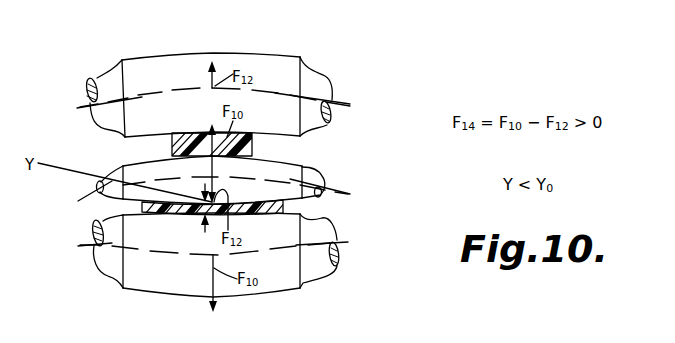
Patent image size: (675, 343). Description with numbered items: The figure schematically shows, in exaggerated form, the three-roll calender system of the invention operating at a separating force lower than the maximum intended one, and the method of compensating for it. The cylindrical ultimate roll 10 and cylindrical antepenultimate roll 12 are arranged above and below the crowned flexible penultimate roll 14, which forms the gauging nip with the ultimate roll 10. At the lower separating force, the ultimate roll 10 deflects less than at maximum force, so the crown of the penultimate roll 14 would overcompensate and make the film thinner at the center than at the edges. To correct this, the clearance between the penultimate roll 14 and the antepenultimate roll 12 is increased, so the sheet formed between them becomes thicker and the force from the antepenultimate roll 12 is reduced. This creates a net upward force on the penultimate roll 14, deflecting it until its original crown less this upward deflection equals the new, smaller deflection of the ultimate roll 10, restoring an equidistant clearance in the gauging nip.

The ultimate roll 10 is at (288, 283).
The antepenultimate roll 12 is at (288, 65).
The penultimate roll 14 is at (288, 168).